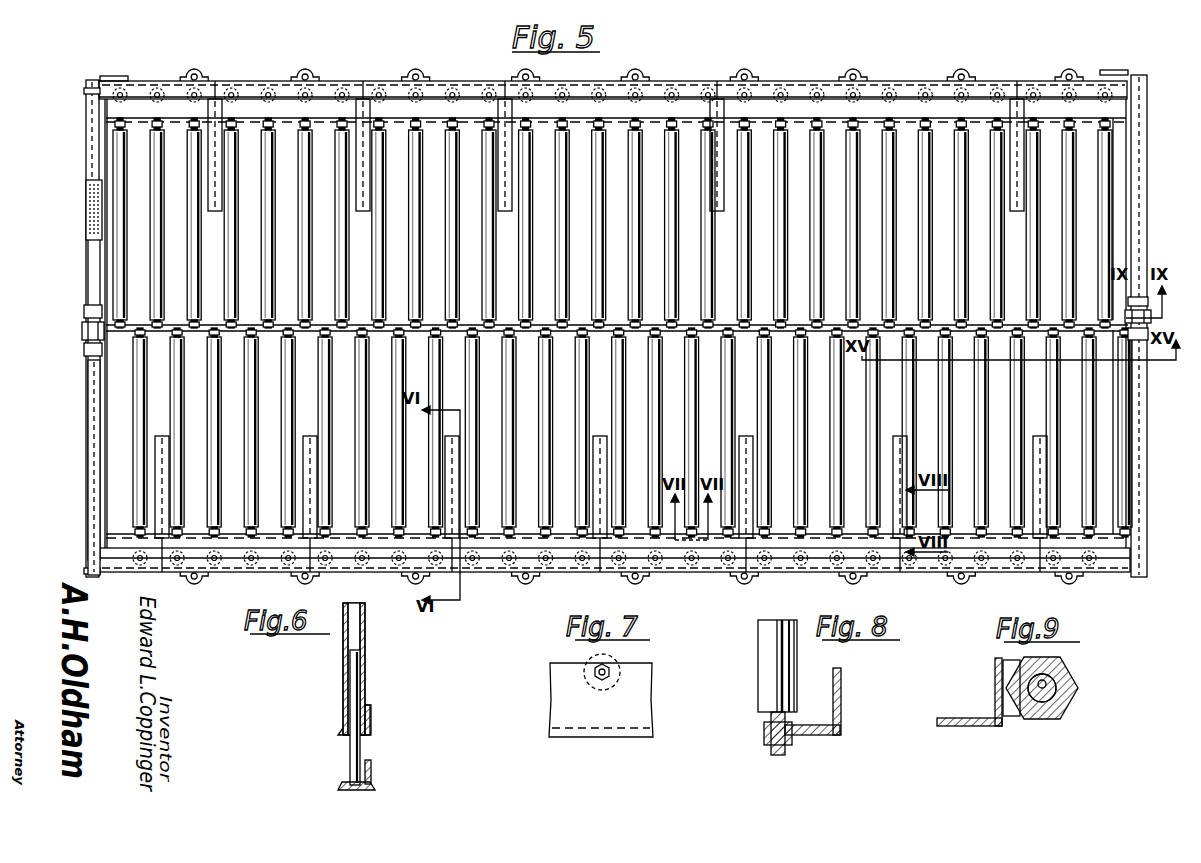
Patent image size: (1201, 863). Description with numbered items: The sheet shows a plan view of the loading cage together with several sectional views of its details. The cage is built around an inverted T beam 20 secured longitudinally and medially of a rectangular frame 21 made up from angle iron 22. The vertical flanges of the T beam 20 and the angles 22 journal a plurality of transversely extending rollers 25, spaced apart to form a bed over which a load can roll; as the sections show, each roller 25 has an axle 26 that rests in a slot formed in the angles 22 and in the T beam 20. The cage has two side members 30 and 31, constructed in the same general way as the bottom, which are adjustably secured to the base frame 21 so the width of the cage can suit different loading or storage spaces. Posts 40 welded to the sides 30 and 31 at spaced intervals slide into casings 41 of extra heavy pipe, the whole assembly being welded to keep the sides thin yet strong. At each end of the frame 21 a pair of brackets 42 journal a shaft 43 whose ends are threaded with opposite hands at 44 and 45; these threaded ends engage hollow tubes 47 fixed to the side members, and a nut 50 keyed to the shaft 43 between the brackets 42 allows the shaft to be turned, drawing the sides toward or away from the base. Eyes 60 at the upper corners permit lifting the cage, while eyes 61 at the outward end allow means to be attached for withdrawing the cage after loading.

In FIG. 5, the inverted T beam 20 is at (430, 312).
In FIG. 5, the rectangular frame 21 is at (437, 130).
In FIG. 5, the angle iron 22 is at (1120, 160).
In FIG. 7, the angle iron 22 is at (633, 702).
In FIG. 8, the angle iron 22 is at (808, 736).
In FIG. 9, the angle iron 22 is at (968, 724).
In FIG. 5, the rollers 25 is at (252, 390).
In FIG. 7, the rollers 25 is at (608, 663).
In FIG. 8, the rollers 25 is at (768, 688).
In FIG. 8, the axles 26 is at (778, 758).
In FIG. 5, the side member 30 is at (583, 90).
In FIG. 5, the side member 31 is at (576, 566).
In FIG. 5, the posts 40 is at (367, 104).
In FIG. 6, the posts 40 is at (363, 754).
In FIG. 5, the casings 41 is at (215, 212).
In FIG. 6, the casings 41 is at (367, 626).
In FIG. 5, the brackets 42 is at (84, 311).
In FIG. 9, the brackets 42 is at (1010, 720).
In FIG. 5, the shaft 43 is at (88, 289).
In FIG. 9, the shaft 43 is at (1072, 688).
In FIG. 5, the threaded end 44 is at (88, 252).
In FIG. 5, the threaded end 45 is at (90, 404).
In FIG. 5, the hollow tubes 47 is at (86, 160).
In FIG. 5, the nut 50 is at (82, 333).
In FIG. 9, the nut 50 is at (1062, 674).
In FIG. 5, the eyes 60 is at (152, 80).
In FIG. 5, the eyes 61 is at (92, 88).